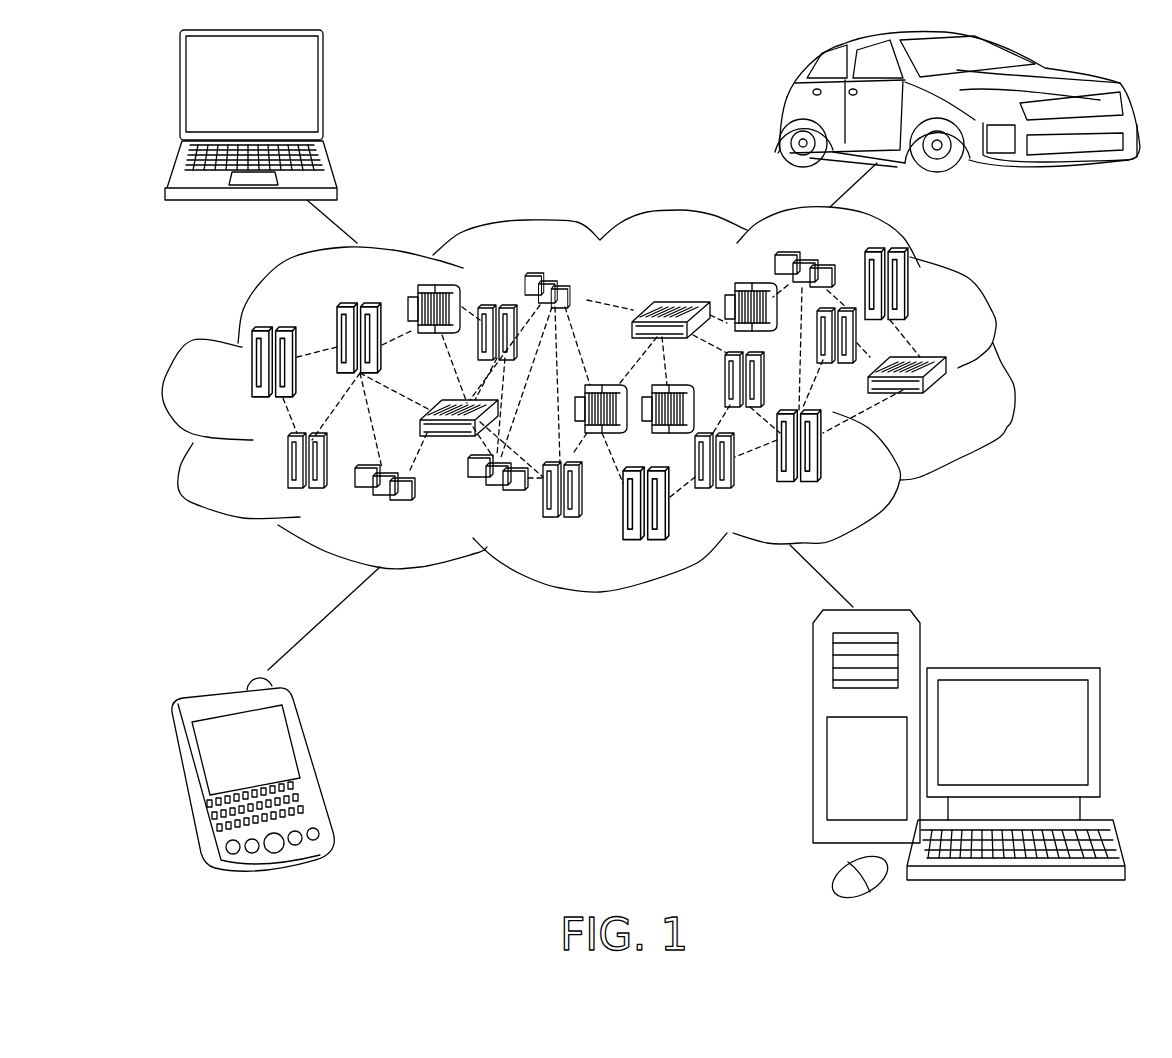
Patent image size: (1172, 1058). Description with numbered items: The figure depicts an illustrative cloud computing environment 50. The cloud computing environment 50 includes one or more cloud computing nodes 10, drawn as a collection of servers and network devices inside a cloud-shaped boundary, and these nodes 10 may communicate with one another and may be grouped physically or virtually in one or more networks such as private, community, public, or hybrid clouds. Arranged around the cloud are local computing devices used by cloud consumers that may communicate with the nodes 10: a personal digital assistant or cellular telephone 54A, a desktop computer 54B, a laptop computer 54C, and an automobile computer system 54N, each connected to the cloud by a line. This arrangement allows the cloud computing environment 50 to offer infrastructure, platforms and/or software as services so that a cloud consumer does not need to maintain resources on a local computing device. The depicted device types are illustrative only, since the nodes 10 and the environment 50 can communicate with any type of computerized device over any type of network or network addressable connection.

The cloud computing node 10 is at (948, 402).
The cloud computing environment 50 is at (617, 400).
The personal digital assistant or cellular telephone 54A is at (313, 763).
The desktop computer 54B is at (1010, 667).
The laptop computer 54C is at (323, 92).
The automobile computer system 54N is at (783, 110).